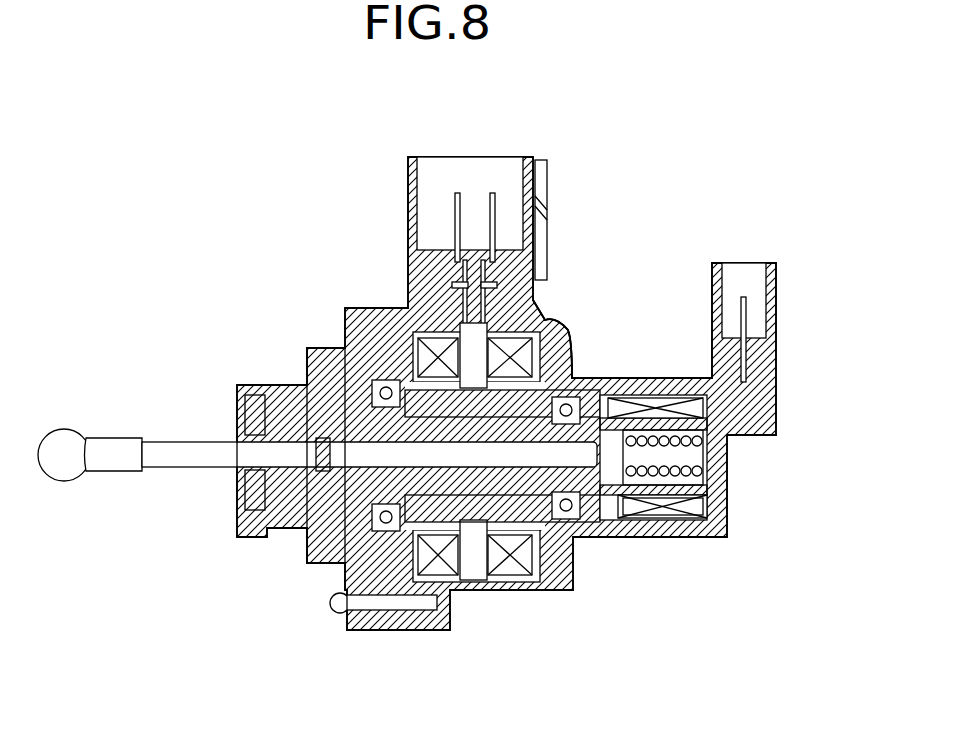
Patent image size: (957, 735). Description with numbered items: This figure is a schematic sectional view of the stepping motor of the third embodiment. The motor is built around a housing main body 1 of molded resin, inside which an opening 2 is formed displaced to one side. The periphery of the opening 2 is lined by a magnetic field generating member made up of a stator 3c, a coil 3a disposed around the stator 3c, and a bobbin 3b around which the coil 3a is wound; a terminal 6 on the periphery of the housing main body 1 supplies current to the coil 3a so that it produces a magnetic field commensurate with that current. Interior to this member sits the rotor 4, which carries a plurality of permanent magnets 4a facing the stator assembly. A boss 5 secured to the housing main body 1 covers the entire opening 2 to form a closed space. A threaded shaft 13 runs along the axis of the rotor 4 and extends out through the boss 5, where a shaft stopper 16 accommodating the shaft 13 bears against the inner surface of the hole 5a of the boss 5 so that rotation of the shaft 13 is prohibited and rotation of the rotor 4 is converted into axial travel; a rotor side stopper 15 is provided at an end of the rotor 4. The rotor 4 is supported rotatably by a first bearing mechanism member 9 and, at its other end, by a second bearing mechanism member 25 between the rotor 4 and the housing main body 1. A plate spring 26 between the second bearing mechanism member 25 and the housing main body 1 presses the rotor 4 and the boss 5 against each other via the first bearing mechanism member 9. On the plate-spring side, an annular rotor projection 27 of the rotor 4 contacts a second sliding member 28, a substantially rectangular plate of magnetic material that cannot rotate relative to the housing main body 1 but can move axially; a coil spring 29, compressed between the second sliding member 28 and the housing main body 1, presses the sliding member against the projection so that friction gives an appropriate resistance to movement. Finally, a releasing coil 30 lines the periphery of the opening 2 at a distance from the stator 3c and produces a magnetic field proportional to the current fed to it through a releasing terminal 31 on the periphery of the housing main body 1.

The housing main body 1 is at (727, 505).
The opening 2 is at (558, 322).
The coil 3a is at (535, 293).
The bobbin 3b is at (500, 592).
The stator 3c is at (525, 592).
The rotor 4 is at (325, 385).
The permanent magnets 4a is at (452, 592).
The boss 5 is at (292, 375).
The hole 5a is at (237, 480).
The terminal 6 is at (490, 200).
The first bearing mechanism member 9 is at (373, 380).
The shaft 13 is at (188, 450).
The rotor side stopper 15 is at (262, 478).
The shaft stopper 16 is at (255, 405).
The second bearing mechanism member 25 is at (600, 398).
The plate spring 26 is at (615, 396).
The annular rotor projection 27 is at (622, 398).
The second sliding member 28 is at (622, 542).
The coil spring 29 is at (728, 462).
The releasing coil 30 is at (662, 522).
The releasing terminal 31 is at (778, 322).